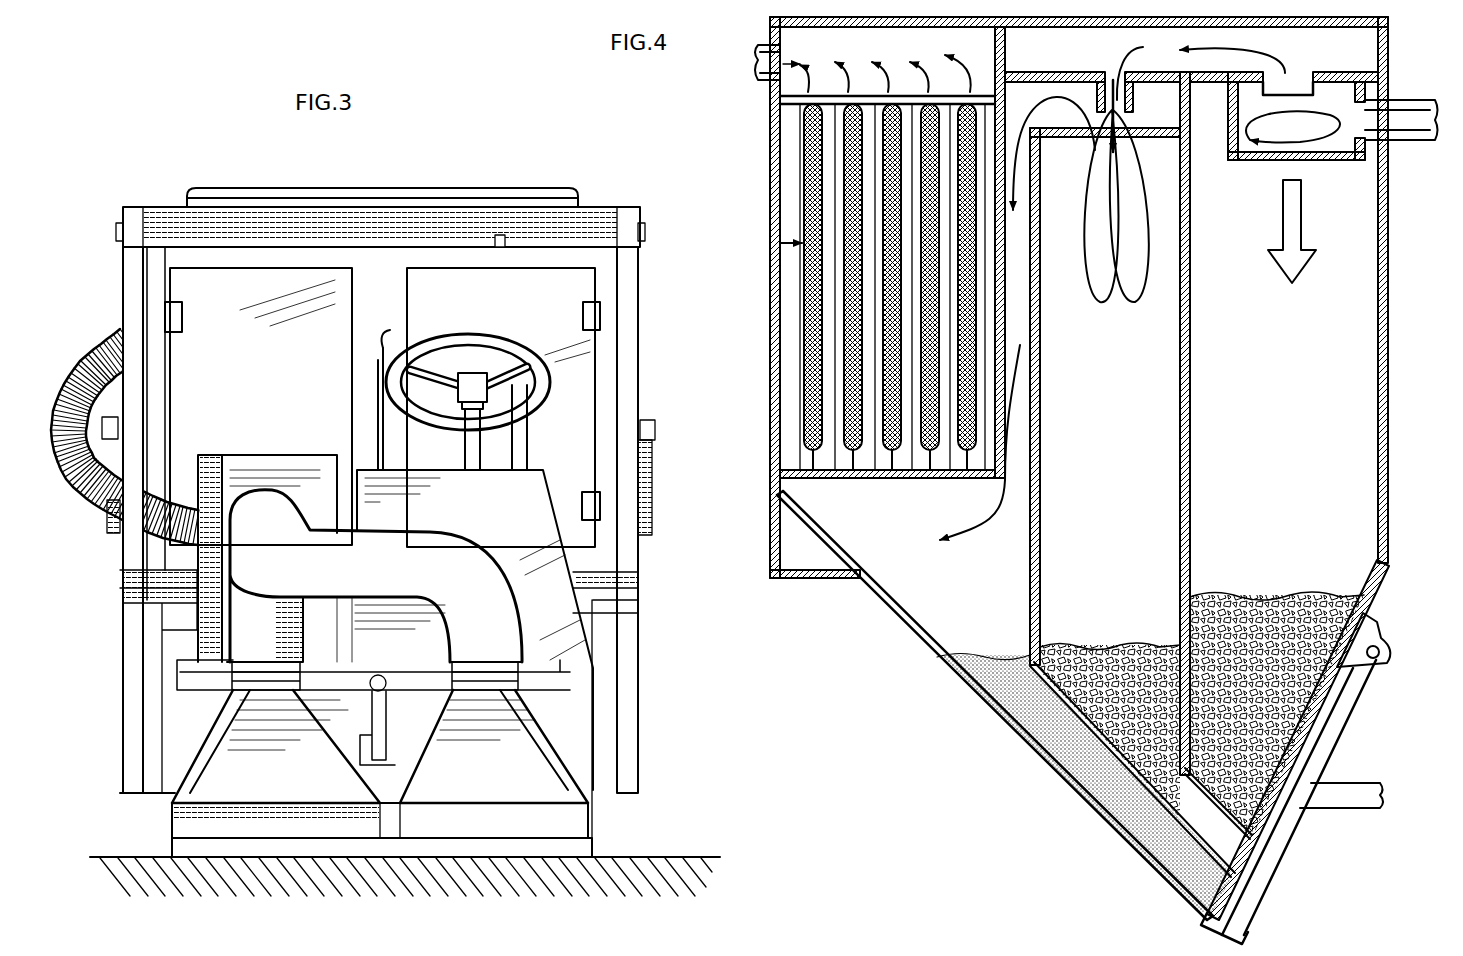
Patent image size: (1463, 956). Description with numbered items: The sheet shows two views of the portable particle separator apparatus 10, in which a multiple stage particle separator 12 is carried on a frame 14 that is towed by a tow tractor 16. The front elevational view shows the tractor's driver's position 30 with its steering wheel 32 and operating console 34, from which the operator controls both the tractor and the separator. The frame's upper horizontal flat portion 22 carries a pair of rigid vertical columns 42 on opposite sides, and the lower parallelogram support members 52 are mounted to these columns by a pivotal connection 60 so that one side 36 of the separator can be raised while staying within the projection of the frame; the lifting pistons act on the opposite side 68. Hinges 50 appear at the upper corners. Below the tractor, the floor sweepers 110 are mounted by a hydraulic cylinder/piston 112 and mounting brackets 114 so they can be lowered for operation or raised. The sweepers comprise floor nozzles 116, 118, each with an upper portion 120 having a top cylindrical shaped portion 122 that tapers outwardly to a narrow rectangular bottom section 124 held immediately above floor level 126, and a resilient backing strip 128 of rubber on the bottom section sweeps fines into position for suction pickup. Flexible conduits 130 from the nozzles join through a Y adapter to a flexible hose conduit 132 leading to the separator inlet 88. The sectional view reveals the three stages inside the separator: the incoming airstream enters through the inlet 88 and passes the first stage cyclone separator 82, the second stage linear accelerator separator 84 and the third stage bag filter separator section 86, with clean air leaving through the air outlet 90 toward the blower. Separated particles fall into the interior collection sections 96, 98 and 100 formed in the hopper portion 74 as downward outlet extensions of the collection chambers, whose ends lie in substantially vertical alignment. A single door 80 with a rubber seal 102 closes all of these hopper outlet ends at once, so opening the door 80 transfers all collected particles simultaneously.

In FIG. 3, the particle separator apparatus 10 is at (262, 172).
In FIG. 3, the multiple stage particle separator 12 is at (473, 212).
In FIG. 4, the multiple stage particle separator 12 is at (1392, 448).
In FIG. 3, the frame 14 is at (615, 600).
In FIG. 3, the tow tractor 16 is at (620, 668).
In FIG. 3, the upper horizontal flat portion 22 is at (150, 582).
In FIG. 3, the driver's position 30 is at (392, 362).
In FIG. 3, the steering wheel 32 is at (478, 342).
In FIG. 3, the operating console 34 is at (305, 465).
In FIG. 4, the side of the particle separator 36 is at (1388, 393).
In FIG. 3, the rigid vertical columns 42 is at (133, 352).
In FIG. 3, the hinge 50 is at (116, 232).
In FIG. 3, the support members 52 is at (107, 515).
In FIG. 3, the pivotal connection 60 is at (118, 428).
In FIG. 4, the side of particle separator 68 is at (770, 160).
In FIG. 4, the hopper portion 74 is at (1048, 770).
In FIG. 4, the door 80 is at (1300, 823).
In FIG. 4, the first stage cyclone separator 82 is at (1293, 312).
In FIG. 4, the second stage linear accelerator separator 84 is at (1110, 316).
In FIG. 4, the third stage bag filter separator section 86 is at (800, 243).
In FIG. 4, the inlet 88 is at (1412, 98).
In FIG. 4, the air outlet 90 is at (758, 70).
In FIG. 4, the interior collection section 96 is at (1283, 600).
In FIG. 4, the interior collection section 98 is at (1118, 642).
In FIG. 4, the interior collection section 100 is at (990, 665).
In FIG. 4, the rubber seal 102 is at (1217, 880).
In FIG. 3, the floor sweepers 110 is at (538, 712).
In FIG. 3, the hydraulic cylinder/piston 112 is at (392, 685).
In FIG. 3, the mounting brackets 114 is at (483, 667).
In FIG. 3, the floor nozzle 116 is at (178, 790).
In FIG. 3, the floor nozzle 118 is at (520, 757).
In FIG. 3, the upper portion 120 is at (238, 728).
In FIG. 3, the top cylindrical shaped portion 122 is at (275, 672).
In FIG. 3, the bottom section 124 is at (575, 812).
In FIG. 3, the floor level 126 is at (665, 856).
In FIG. 3, the resilient backing strip 128 is at (580, 845).
In FIG. 3, the flexible conduits 130 is at (475, 630).
In FIG. 3, the flexible hose conduit 132 is at (130, 488).